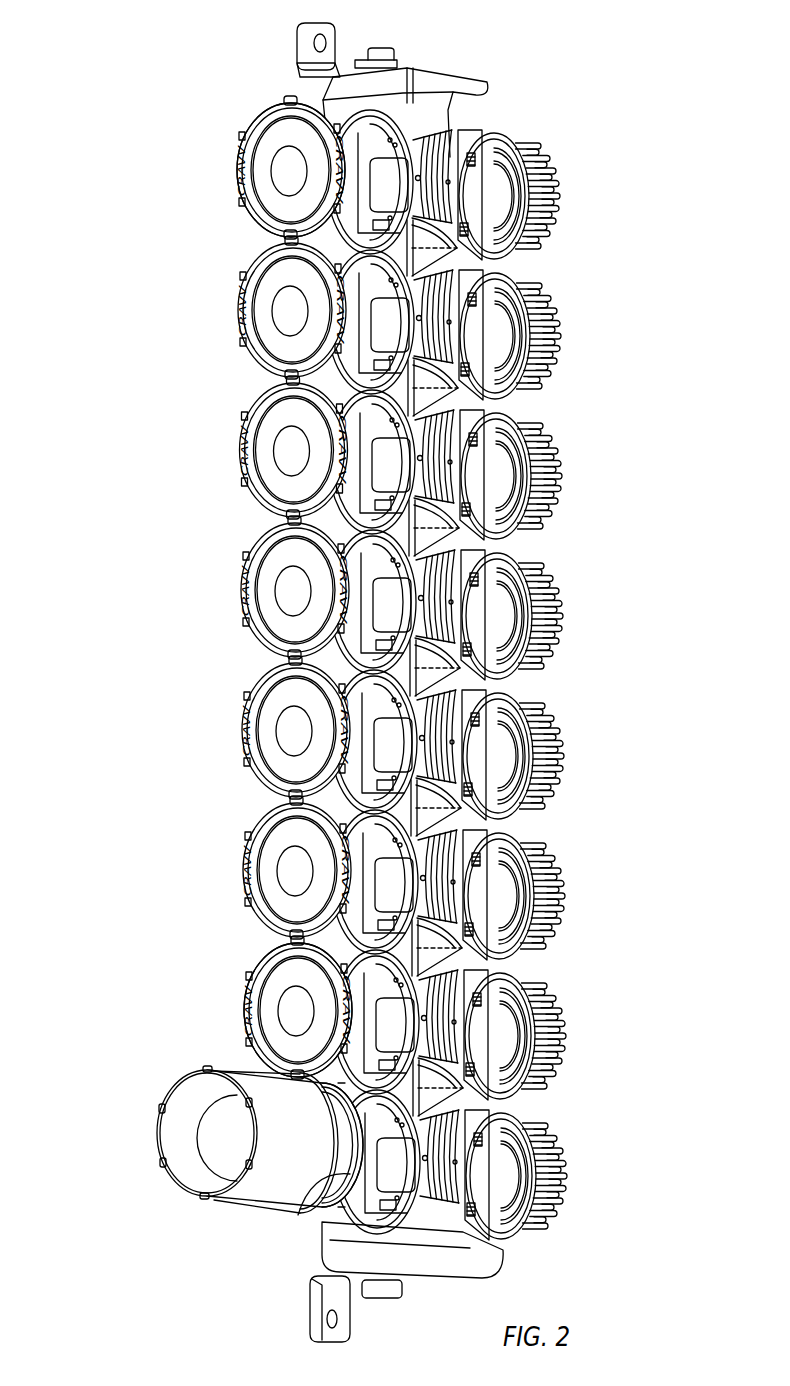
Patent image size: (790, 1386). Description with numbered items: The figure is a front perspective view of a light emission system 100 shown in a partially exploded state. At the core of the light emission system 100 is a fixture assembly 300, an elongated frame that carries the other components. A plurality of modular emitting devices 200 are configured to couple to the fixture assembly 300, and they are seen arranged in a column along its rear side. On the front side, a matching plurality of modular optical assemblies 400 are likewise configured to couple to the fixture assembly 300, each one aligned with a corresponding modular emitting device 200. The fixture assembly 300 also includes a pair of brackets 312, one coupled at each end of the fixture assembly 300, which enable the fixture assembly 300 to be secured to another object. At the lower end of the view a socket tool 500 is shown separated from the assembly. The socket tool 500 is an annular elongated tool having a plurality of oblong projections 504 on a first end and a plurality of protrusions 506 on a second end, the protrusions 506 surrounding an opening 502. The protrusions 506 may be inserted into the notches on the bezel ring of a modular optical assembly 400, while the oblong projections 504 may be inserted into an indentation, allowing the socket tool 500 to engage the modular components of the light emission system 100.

The light emission system 100 is at (220, 43).
The modular emitting device 200 is at (564, 686).
The fixture assembly 300 is at (499, 63).
The bracket 312 is at (335, 37).
The modular optical assembly 400 is at (242, 587).
The socket tool 500 is at (171, 1068).
The opening 502 is at (177, 1136).
The oblong projections 504 is at (160, 1163).
The protrusions 506 is at (340, 1173).